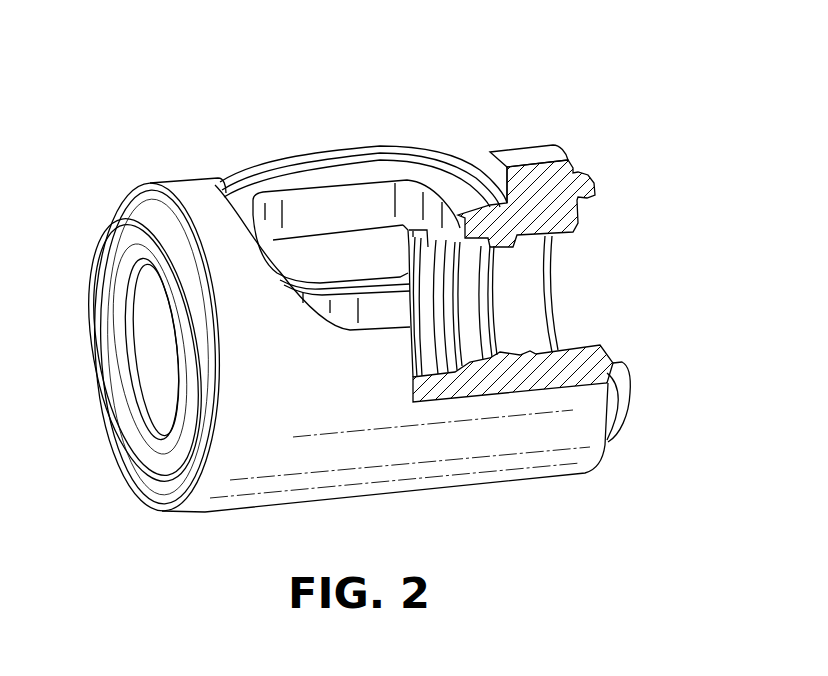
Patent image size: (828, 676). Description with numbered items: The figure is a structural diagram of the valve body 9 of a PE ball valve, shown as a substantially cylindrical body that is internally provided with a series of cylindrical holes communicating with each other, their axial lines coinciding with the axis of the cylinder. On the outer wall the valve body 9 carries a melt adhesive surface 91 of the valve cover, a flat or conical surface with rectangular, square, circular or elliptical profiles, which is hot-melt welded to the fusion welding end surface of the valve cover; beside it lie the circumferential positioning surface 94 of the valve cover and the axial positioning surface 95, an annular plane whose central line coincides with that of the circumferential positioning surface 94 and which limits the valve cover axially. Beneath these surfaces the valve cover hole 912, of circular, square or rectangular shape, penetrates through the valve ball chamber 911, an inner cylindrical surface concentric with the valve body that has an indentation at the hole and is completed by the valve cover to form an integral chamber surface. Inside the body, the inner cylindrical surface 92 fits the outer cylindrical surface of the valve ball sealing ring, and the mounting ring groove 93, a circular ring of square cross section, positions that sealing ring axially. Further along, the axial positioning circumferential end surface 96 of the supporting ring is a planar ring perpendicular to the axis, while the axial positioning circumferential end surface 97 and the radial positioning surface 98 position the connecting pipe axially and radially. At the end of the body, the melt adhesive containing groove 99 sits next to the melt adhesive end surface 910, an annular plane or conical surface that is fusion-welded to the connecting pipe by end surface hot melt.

The valve body 9 is at (323, 482).
The melt adhesive surface of the valve cover 91 is at (285, 180).
The inner cylindrical surface 92 is at (420, 268).
The mounting ring groove for the valve ball sealing ring 93 is at (410, 250).
The circumferential positioning surface of the valve cover 94 is at (443, 167).
The axial positioning surface of the valve cover 95 is at (477, 163).
The axial positioning circumferential end surface of the supporting ring 96 is at (555, 173).
The axial positioning circumferential end surface of the connecting pipe 97 is at (517, 248).
The radial positioning surface of the connecting pipe 98 is at (527, 290).
The melt adhesive containing groove 99 is at (620, 362).
The melt adhesive end surface 910 is at (148, 448).
The valve ball chamber 911 is at (342, 260).
The valve cover hole 912 is at (270, 205).